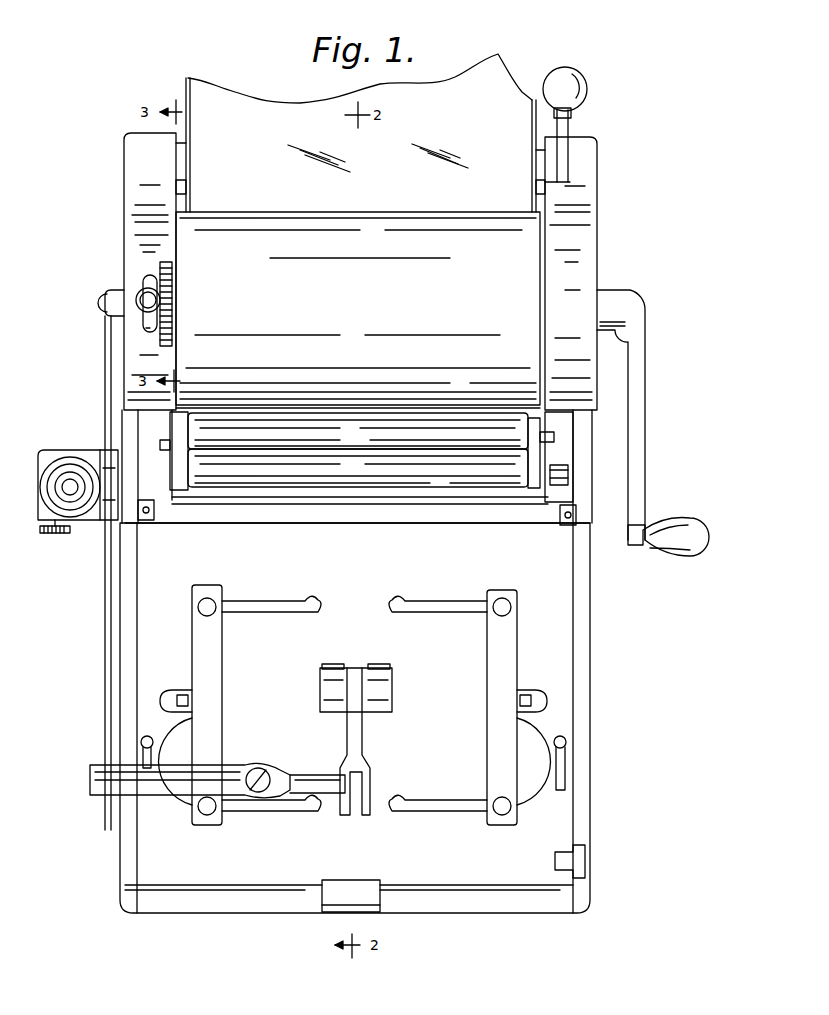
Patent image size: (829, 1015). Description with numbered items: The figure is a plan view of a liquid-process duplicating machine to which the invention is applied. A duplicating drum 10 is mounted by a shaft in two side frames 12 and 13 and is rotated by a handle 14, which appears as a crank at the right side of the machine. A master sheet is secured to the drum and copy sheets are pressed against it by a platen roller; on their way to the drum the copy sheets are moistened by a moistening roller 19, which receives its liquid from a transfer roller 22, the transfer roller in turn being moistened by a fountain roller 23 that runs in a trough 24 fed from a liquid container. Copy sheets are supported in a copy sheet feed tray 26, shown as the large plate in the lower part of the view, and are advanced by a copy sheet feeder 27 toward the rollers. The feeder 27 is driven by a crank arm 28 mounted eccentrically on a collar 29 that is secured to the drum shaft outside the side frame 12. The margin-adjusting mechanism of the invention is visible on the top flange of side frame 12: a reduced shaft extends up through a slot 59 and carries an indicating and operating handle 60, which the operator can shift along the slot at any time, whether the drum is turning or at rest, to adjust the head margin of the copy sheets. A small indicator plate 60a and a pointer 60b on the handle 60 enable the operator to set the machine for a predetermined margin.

The duplicating drum 10 is at (366, 320).
The side frame 12 is at (126, 240).
The side frame 13 is at (597, 253).
The handle 14 is at (638, 310).
The moistening roller 19 is at (332, 418).
The transfer roller 22 is at (363, 444).
The fountain roller 23 is at (363, 475).
The trough 24 is at (360, 494).
The copy sheet feed tray 26 is at (148, 658).
The copy sheet feeder 27 is at (320, 694).
The crank arm 28 is at (106, 346).
The collar 29 is at (112, 300).
The slot 59 is at (146, 285).
The indicating and operating handle 60 is at (148, 300).
The indicator plate 60a is at (150, 330).
The pointer 60b is at (170, 298).